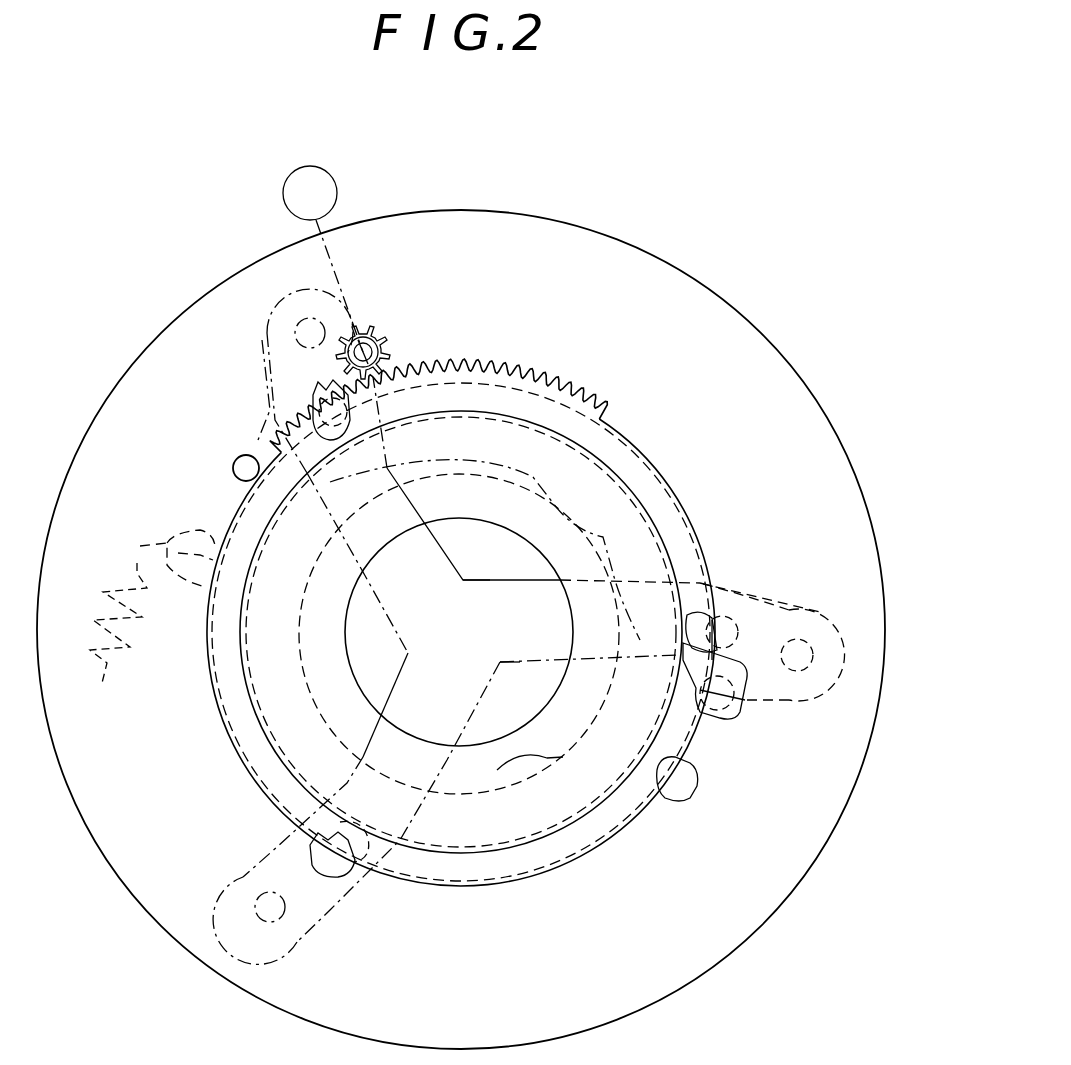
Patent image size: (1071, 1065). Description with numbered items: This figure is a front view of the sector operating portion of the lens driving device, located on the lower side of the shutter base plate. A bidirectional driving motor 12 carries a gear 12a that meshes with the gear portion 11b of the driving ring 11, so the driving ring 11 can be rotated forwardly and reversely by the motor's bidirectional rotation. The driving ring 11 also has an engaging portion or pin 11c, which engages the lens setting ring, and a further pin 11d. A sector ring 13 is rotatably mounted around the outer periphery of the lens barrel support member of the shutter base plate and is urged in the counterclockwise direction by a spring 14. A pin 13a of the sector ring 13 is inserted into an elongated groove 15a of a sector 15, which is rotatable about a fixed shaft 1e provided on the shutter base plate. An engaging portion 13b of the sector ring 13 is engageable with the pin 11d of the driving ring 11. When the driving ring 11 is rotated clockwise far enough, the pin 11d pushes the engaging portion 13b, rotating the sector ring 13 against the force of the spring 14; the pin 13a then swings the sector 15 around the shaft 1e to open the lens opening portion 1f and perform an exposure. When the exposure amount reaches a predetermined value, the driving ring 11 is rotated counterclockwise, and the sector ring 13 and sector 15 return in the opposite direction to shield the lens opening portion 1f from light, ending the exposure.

The bidirectional driving motor 12 is at (340, 198).
The gear 12a is at (378, 338).
The driving ring 11 is at (283, 437).
The gear portion 11b is at (283, 420).
The engaging portion or pin 11c is at (236, 468).
The pin 11d is at (730, 710).
The sector ring 13 is at (185, 532).
The pin 13a is at (730, 625).
The engaging portion 13b is at (678, 787).
The spring 14 is at (137, 563).
The sector 15 is at (798, 682).
The elongated groove 15a is at (777, 623).
The fixed shaft 1e is at (803, 657).
The lens opening portion 1f is at (518, 688).